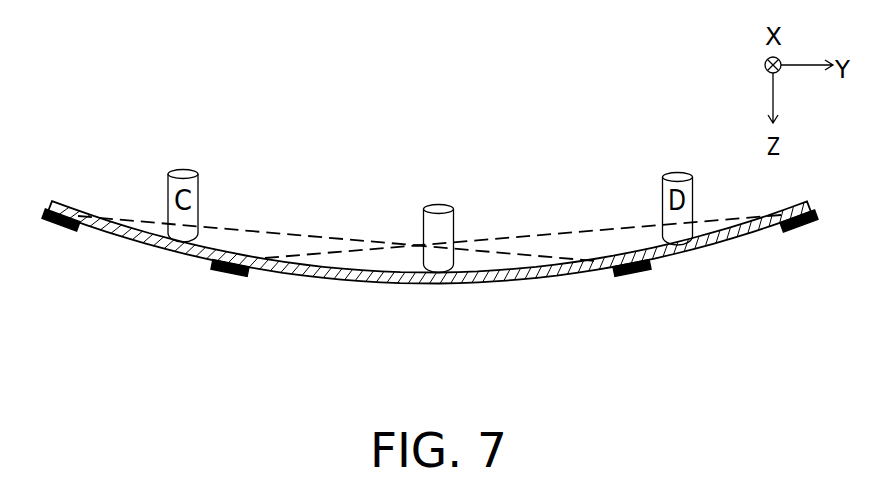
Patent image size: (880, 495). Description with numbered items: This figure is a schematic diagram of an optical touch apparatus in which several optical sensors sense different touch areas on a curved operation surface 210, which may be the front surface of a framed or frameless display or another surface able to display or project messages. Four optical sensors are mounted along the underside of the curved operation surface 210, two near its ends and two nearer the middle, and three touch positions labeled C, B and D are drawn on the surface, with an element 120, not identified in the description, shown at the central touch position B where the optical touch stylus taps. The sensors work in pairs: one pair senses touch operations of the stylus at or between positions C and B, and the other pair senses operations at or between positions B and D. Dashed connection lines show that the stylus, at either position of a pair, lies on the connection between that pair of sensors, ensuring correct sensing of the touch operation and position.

The probe 120 is at (440, 208).
The curved operation surface 210 is at (150, 245).